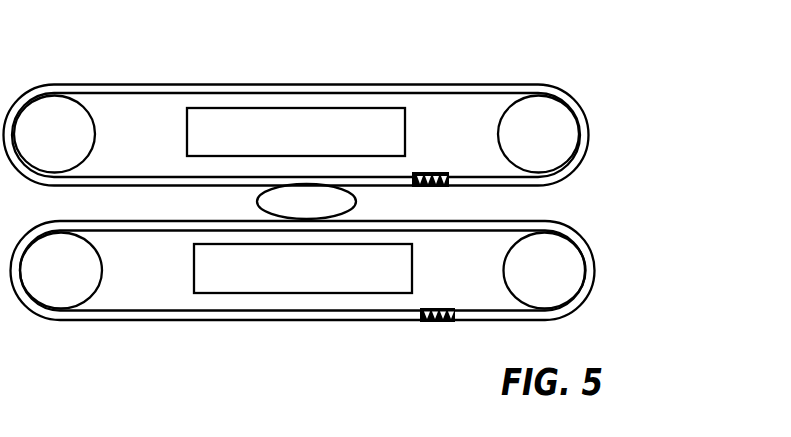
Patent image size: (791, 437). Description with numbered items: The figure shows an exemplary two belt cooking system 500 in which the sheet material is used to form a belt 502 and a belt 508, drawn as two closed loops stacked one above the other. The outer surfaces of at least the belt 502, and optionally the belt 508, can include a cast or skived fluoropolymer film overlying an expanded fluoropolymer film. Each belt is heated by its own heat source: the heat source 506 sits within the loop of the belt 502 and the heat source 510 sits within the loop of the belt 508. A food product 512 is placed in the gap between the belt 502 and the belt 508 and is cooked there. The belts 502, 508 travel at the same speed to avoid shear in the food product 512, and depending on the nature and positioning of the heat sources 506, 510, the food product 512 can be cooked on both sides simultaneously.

The system 500 is at (492, 29).
The belt 502 is at (303, 299).
The heat source 506 is at (322, 280).
The belt 508 is at (296, 109).
The heat source 510 is at (317, 146).
The food product 512 is at (211, 280).